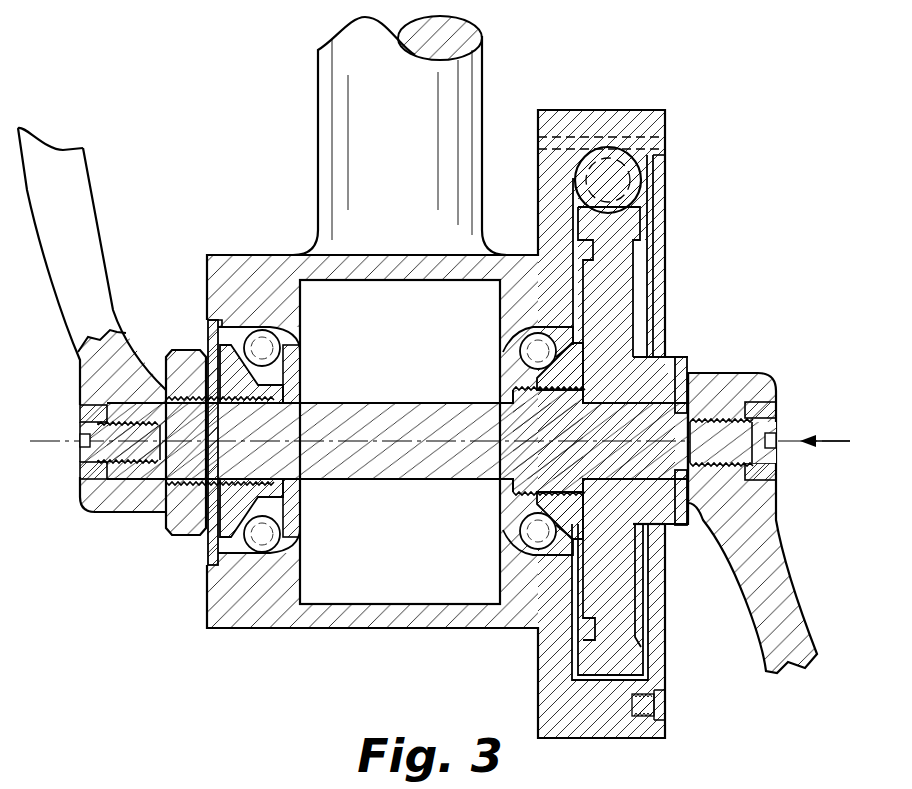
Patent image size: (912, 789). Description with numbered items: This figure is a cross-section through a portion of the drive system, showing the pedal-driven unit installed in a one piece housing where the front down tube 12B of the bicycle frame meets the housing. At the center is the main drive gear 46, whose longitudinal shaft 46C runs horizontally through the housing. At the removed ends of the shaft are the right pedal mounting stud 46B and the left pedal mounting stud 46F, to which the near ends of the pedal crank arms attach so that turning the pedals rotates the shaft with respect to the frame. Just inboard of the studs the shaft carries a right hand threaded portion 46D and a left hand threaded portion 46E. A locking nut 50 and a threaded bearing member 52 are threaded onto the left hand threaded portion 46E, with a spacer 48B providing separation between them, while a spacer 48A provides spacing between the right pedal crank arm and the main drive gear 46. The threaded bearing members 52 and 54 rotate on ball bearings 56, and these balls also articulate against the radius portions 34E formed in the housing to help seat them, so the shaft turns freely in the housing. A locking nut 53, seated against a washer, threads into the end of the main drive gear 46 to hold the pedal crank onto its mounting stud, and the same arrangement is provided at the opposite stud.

The front down tube 12B is at (376, 140).
The longitudinal shaft 46C is at (388, 403).
The right hand threaded portion 46D is at (520, 478).
The left hand threaded portion 46E is at (270, 490).
The main drive gear 46 is at (620, 275).
The right pedal mounting stud 46B is at (725, 410).
The left pedal mounting stud 46F is at (138, 477).
The spacer 48A is at (690, 368).
The spacer 48B is at (207, 335).
The locking nut 50 is at (188, 538).
The threaded bearing member 52 is at (262, 382).
The locking nut 53 is at (80, 455).
The threaded bearing member 54 is at (518, 383).
The ball bearings 56 is at (272, 343).
The radius portion 34E is at (268, 545).